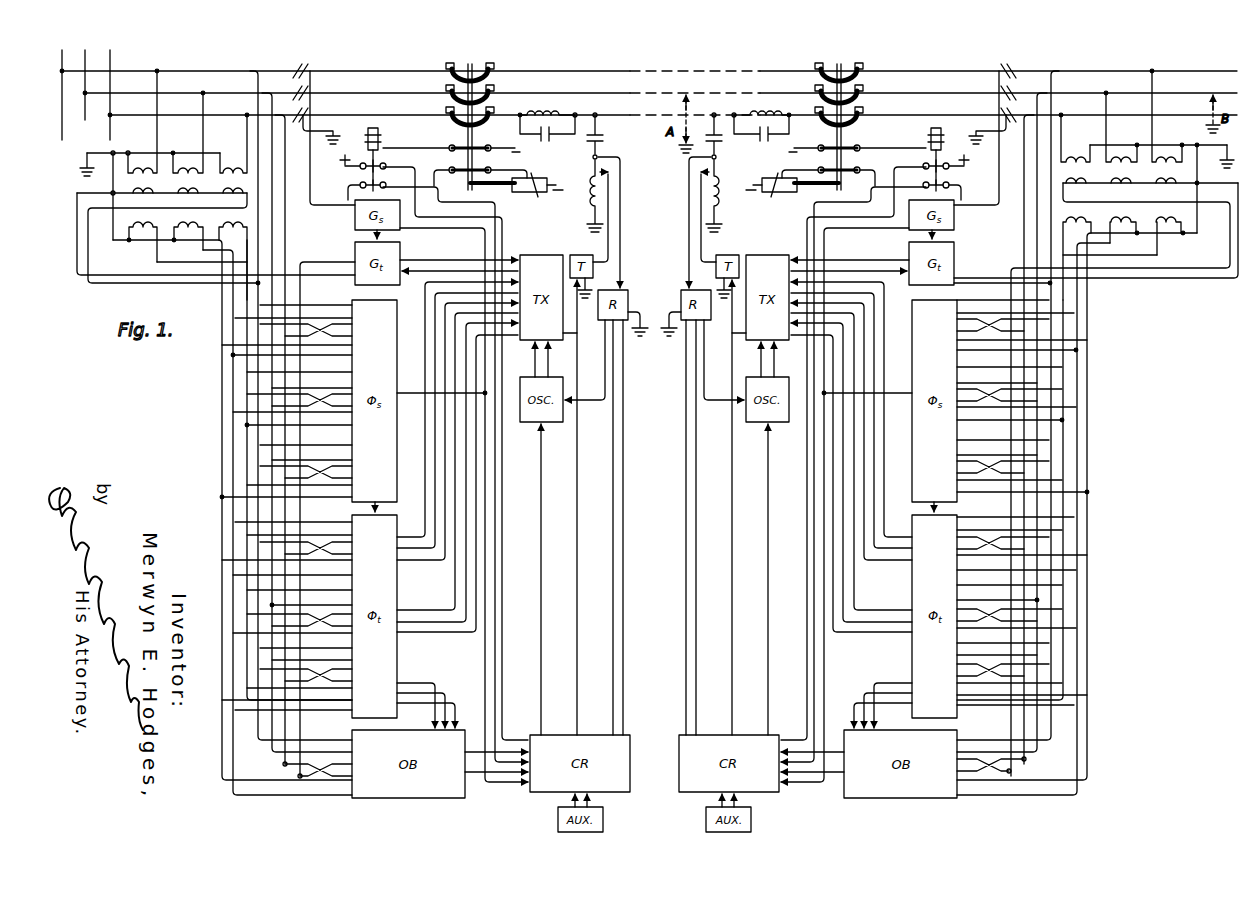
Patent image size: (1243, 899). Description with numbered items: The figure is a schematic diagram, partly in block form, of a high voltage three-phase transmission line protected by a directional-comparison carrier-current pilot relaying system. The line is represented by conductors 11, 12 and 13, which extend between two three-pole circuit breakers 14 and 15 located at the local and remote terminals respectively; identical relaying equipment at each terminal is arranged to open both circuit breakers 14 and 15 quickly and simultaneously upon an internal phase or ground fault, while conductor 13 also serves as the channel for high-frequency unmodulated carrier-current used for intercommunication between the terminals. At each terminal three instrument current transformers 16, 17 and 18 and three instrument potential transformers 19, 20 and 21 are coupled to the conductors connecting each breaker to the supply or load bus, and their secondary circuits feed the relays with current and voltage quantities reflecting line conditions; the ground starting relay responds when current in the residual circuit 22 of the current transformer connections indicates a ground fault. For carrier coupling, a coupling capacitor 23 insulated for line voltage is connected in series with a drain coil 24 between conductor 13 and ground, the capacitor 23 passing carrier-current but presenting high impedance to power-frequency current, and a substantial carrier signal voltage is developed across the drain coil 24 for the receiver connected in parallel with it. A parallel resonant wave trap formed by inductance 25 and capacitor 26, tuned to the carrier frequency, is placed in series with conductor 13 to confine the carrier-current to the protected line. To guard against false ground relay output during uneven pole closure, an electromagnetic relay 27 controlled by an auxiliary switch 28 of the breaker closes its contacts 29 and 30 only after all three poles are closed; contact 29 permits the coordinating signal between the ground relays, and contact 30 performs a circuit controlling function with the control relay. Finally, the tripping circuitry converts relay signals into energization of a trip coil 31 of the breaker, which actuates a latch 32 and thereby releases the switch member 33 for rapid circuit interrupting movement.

The conductor 11 is at (620, 70).
The conductor 12 is at (620, 92).
The conductor 13 is at (620, 114).
The circuit breaker 14 is at (465, 126).
The circuit breaker 15 is at (842, 126).
The instrument current transformer 16 is at (300, 66).
The instrument current transformer 17 is at (305, 90).
The instrument current transformer 18 is at (305, 112).
The instrument potential transformer 19 is at (653, 165).
The instrument potential transformer 20 is at (656, 170).
The instrument potential transformer 21 is at (654, 206).
The residual circuit 22 is at (312, 148).
The coupling capacitor 23 is at (600, 136).
The drain coil 24 is at (590, 200).
The inductance 25 is at (548, 106).
The capacitor 26 is at (549, 142).
The electromagnetic relay 27 is at (367, 134).
The auxiliary switch 28 is at (449, 153).
The contact 29 is at (347, 193).
The contact 30 is at (358, 169).
The trip coil 31 is at (540, 181).
The latch 32 is at (495, 187).
The switch member 33 is at (486, 122).